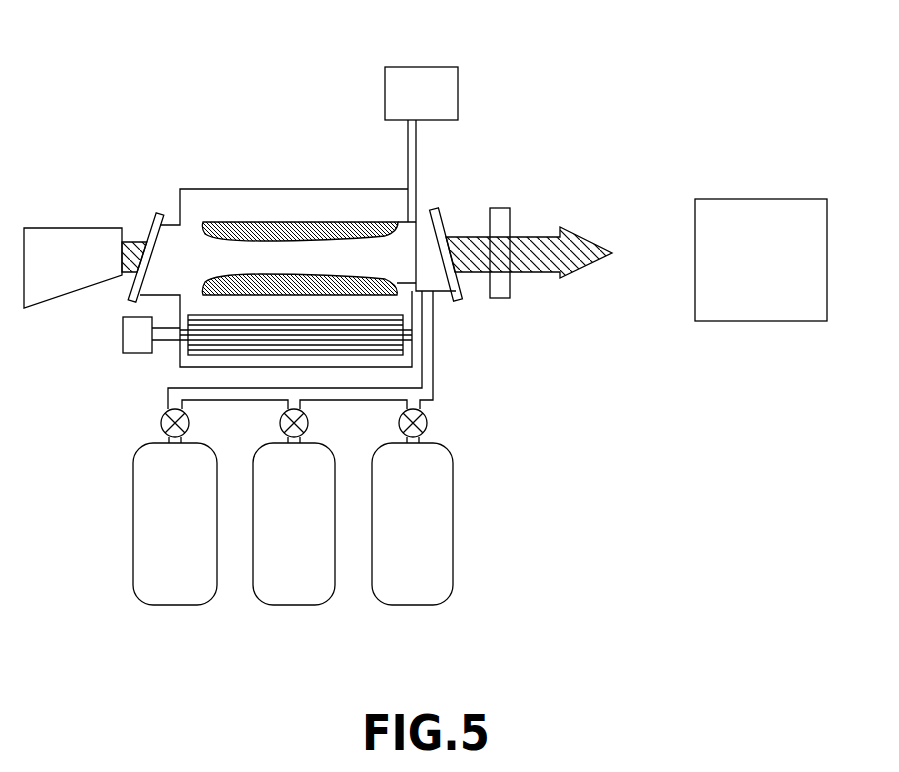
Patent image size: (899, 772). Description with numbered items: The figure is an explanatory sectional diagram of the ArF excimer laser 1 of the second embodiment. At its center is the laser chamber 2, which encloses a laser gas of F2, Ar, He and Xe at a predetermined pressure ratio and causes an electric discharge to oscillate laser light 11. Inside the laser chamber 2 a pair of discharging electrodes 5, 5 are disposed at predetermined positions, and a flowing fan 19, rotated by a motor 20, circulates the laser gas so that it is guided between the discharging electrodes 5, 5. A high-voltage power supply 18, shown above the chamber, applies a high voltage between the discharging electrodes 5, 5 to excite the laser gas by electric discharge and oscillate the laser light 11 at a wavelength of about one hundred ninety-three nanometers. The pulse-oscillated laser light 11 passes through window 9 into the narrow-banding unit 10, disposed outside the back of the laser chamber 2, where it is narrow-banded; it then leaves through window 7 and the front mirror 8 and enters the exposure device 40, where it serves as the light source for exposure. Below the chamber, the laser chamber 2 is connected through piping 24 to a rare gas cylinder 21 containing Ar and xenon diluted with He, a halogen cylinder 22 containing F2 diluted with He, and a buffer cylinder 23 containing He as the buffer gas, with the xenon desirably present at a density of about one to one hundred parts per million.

The ArF excimer laser 1 is at (572, 143).
The laser chamber 2 is at (199, 189).
The discharging electrodes 5 is at (277, 223).
The window 7 is at (441, 214).
The front mirror 8 is at (500, 208).
The window 9 is at (147, 212).
The narrow-banding unit 10 is at (62, 232).
The laser light 11 is at (583, 240).
The high-voltage power supply 18 is at (459, 78).
The flowing fan 19 is at (401, 316).
The motor 20 is at (123, 338).
The rare gas cylinder 21 is at (165, 595).
The halogen cylinder 22 is at (298, 595).
The buffer cylinder 23 is at (412, 595).
The piping 24 is at (437, 377).
The exposure device 40 is at (766, 198).